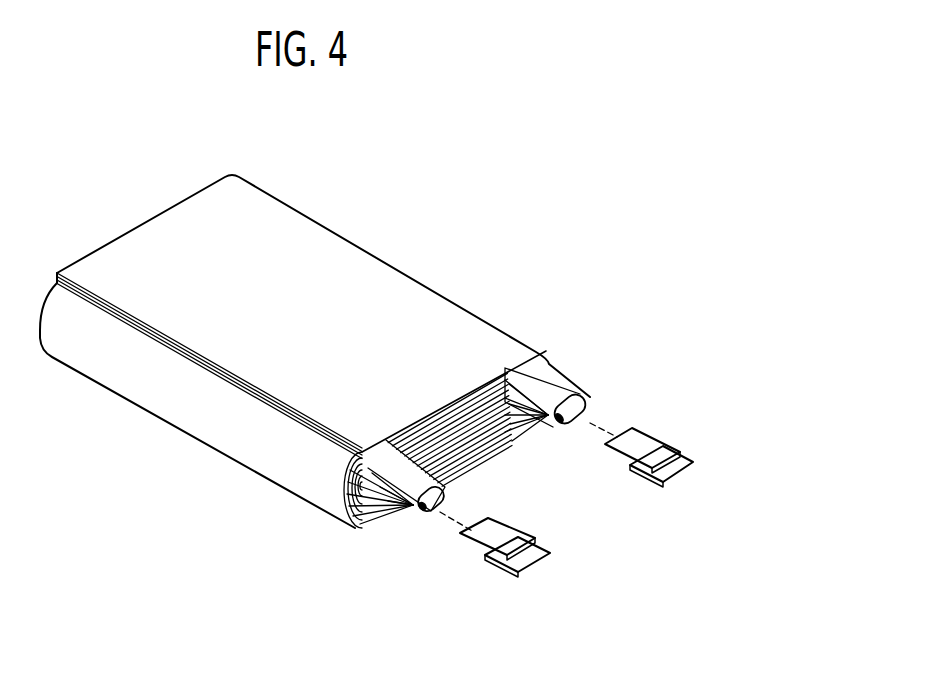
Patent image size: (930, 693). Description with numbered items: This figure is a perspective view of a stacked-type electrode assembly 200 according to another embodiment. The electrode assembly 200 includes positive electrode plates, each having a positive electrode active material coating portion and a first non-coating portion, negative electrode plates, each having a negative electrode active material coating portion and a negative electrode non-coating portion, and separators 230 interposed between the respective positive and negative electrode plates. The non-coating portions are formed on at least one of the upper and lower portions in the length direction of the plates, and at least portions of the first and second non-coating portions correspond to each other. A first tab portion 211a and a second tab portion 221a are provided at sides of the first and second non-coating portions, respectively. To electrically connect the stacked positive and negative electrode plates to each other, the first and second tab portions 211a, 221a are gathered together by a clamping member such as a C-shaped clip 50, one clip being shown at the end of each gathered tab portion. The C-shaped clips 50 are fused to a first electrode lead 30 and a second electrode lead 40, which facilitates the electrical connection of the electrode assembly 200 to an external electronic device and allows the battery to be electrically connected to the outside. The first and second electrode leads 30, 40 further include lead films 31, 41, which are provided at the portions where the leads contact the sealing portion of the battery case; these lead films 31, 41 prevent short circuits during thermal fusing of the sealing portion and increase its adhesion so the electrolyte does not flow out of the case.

The stacked-type electrode assembly 200 is at (442, 186).
The separators 230 is at (422, 303).
The first tab portion 211a is at (558, 393).
The second tab portion 221a is at (367, 527).
The C-shaped clip 50 is at (592, 394).
The first electrode lead 30 is at (668, 470).
The lead film 31 is at (662, 450).
The second electrode lead 40 is at (527, 558).
The lead film 41 is at (488, 565).